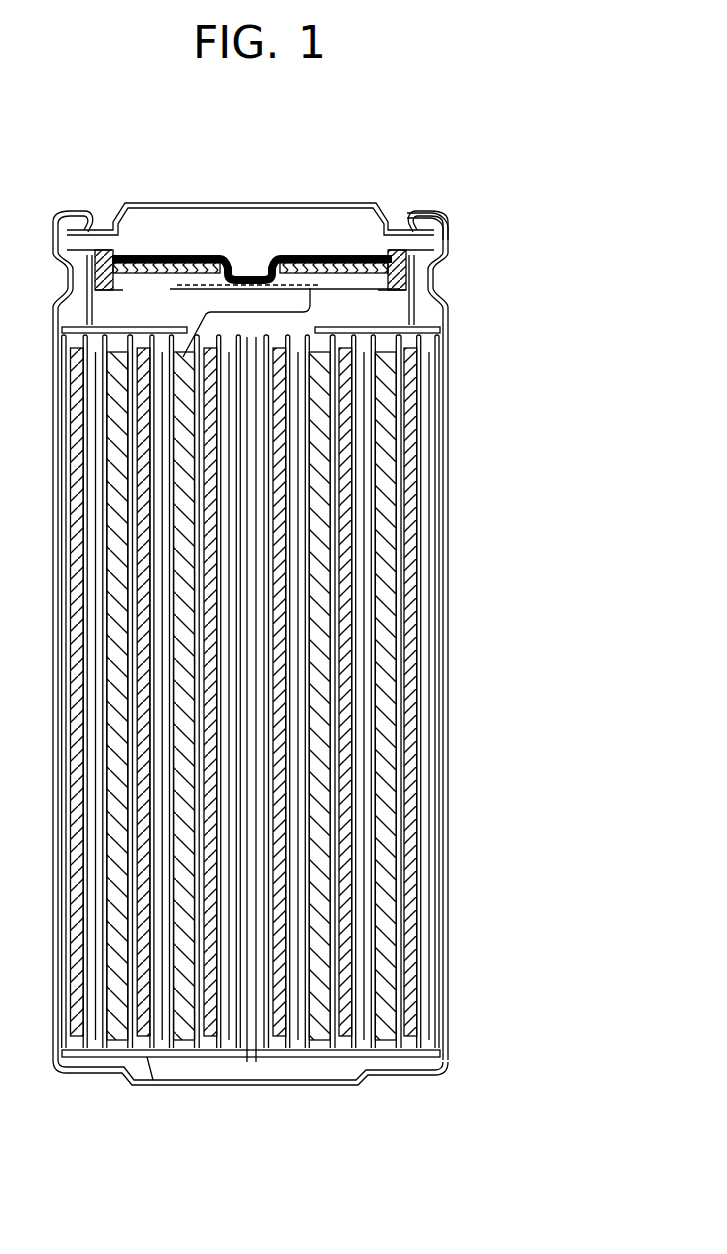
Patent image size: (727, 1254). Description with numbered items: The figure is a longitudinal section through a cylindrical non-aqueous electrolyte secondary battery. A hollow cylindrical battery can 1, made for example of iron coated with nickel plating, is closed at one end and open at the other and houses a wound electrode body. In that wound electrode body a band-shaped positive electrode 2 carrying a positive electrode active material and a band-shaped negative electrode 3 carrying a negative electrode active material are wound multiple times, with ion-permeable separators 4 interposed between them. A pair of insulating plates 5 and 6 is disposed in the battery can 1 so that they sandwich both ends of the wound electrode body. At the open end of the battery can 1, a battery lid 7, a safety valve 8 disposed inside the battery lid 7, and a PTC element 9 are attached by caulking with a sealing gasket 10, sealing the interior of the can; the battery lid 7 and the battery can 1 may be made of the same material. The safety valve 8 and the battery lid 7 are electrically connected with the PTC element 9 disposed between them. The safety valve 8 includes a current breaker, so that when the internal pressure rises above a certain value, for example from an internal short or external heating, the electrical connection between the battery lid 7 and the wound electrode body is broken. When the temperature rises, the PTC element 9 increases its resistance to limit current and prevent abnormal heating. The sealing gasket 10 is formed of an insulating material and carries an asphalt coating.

The battery can 1 is at (448, 535).
The positive electrode 2 is at (388, 467).
The negative electrode 3 is at (420, 495).
The separator 4 is at (400, 415).
The insulating plate 5 is at (423, 1053).
The insulating plate 6 is at (440, 330).
The battery lid 7 is at (162, 205).
The safety valve 8 is at (222, 262).
The PTC element 9 is at (440, 238).
The sealing gasket 10 is at (432, 215).